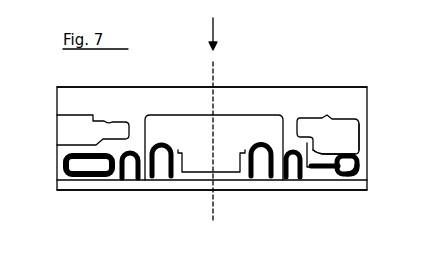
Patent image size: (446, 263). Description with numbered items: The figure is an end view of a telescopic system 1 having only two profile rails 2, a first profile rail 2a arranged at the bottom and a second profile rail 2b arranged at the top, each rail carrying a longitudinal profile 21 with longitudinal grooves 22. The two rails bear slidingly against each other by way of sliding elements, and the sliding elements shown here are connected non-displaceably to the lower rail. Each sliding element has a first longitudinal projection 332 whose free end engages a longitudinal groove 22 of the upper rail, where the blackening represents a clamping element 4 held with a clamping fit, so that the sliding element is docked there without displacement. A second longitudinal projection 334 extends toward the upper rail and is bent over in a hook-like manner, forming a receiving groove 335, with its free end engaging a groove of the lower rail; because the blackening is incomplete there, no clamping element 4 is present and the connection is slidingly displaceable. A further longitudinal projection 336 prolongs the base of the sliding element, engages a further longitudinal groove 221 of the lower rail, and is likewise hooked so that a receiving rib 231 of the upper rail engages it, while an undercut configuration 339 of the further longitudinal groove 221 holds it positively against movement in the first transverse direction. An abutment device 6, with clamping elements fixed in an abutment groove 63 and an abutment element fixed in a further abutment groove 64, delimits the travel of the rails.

The telescopic system 1 is at (266, 49).
The profile rail 2 is at (200, 134).
The first profile rail 2a is at (66, 194).
The second profile rail 2b is at (313, 80).
The clamping element 4 is at (136, 165).
The abutment device 6 is at (330, 124).
The longitudinal profile 21 is at (80, 121).
The longitudinal groove 22 is at (250, 171).
The abutment groove 63 is at (352, 132).
The further abutment groove 64 is at (372, 107).
The further longitudinal groove 221 is at (345, 152).
The receiving rib 231 is at (323, 169).
The first longitudinal projection 332 is at (128, 166).
The second longitudinal projection 334 is at (252, 147).
The receiving groove 335 is at (319, 171).
The further longitudinal projection 336 is at (347, 172).
The undercut configuration 339 is at (352, 162).